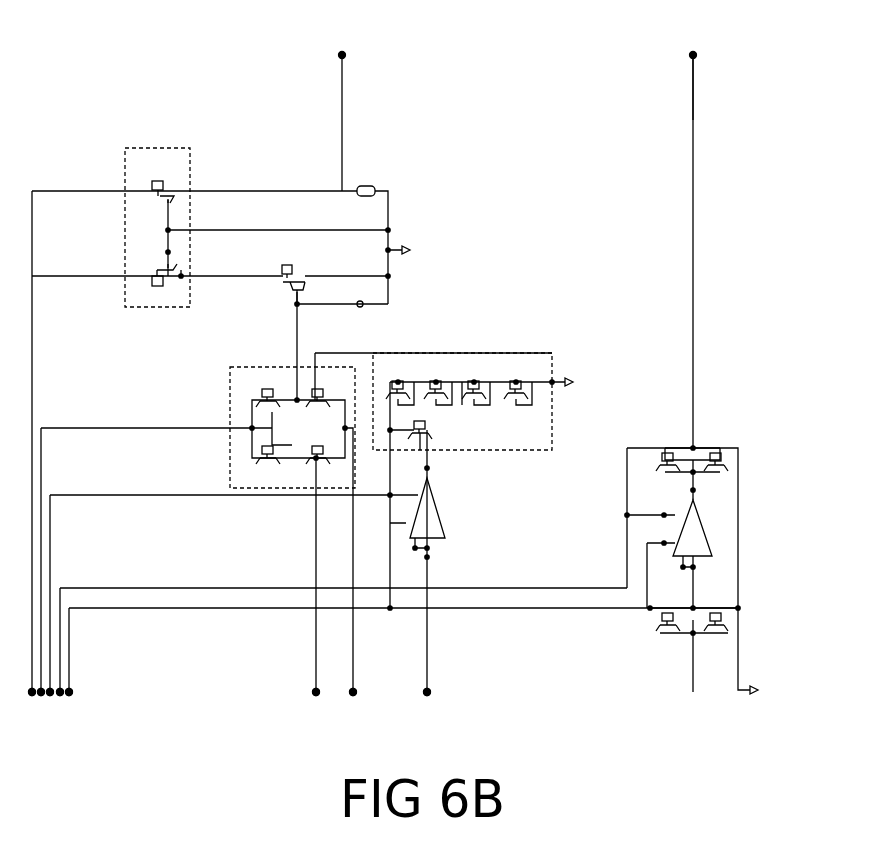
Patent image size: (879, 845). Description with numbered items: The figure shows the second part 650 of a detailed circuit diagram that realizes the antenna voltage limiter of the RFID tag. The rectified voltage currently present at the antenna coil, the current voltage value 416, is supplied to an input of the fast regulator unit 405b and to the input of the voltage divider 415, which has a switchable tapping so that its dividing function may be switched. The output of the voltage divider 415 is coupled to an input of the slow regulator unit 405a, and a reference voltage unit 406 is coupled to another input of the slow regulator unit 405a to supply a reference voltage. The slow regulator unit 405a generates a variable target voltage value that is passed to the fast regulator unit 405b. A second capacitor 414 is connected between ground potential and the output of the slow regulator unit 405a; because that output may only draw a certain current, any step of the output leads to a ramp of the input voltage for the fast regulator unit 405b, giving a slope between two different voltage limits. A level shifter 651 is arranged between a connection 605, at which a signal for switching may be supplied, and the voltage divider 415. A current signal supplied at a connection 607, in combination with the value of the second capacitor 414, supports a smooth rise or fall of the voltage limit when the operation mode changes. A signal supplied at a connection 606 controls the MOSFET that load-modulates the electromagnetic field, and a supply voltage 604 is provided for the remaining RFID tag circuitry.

The slow regulator unit 405a is at (243, 490).
The fast regulator unit 405b is at (162, 307).
The reference voltage unit 406 is at (314, 697).
The second capacitor 414 is at (382, 300).
The voltage divider 415 is at (512, 450).
The current voltage value 416 is at (33, 700).
The supply voltage 604 is at (60, 700).
The connection 605 is at (428, 697).
The connection 606 is at (690, 52).
The connection 607 is at (353, 697).
The second part 650 is at (735, 44).
The level shifter 651 is at (438, 528).